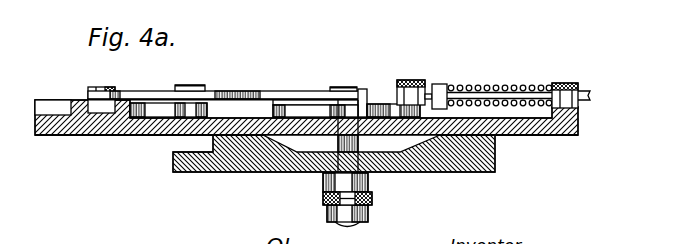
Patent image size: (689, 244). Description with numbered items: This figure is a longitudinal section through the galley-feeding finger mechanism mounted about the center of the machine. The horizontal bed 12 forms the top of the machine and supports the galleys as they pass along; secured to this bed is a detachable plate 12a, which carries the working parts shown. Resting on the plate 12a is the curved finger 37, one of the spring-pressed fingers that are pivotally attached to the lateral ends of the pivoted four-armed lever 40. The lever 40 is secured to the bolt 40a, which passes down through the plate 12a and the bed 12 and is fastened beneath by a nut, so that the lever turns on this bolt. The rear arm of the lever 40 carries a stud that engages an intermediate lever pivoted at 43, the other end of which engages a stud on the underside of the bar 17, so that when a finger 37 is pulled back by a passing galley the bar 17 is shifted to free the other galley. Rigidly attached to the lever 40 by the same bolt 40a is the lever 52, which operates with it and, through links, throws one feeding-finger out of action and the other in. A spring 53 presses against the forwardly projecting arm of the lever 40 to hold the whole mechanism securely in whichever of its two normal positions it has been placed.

The bed 12 is at (494, 159).
The detachable plate 12a is at (150, 136).
The bar 17 is at (92, 87).
The curved fingers 37 is at (277, 99).
The four-armed lever 40 is at (383, 99).
The bolt 40a is at (338, 143).
The pivot 43 is at (199, 85).
The lever 52 is at (372, 197).
The spring 53 is at (482, 88).